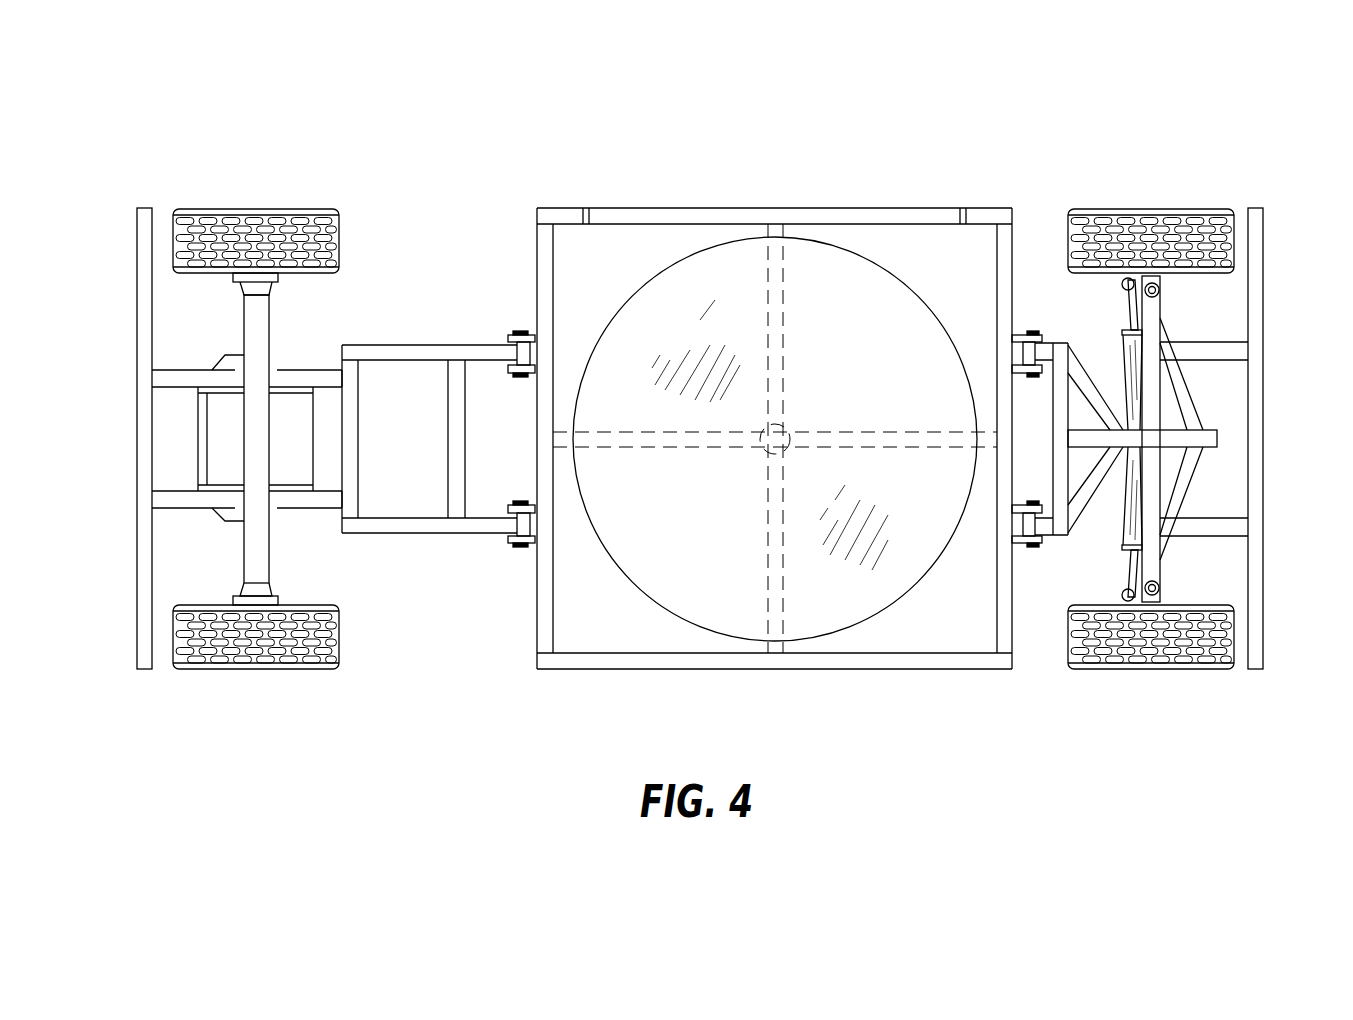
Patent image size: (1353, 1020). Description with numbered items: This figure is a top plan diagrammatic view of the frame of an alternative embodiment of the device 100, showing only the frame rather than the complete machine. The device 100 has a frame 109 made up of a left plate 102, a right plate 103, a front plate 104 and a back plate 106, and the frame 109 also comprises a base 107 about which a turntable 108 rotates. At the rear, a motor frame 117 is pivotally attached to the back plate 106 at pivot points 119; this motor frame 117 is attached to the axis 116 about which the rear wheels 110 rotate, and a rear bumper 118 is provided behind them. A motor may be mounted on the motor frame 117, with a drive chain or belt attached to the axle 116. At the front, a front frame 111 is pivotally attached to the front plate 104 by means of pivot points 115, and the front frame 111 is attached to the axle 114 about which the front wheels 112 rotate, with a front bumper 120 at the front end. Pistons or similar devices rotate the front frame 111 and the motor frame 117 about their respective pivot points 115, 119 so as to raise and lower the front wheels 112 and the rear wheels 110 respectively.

The device 100 is at (578, 64).
The left plate 102 is at (797, 440).
The right plate 103 is at (600, 660).
The front plate 104 is at (1004, 268).
The back plate 106 is at (545, 262).
The base 107 is at (872, 240).
The turntable 108 is at (747, 283).
The frame 109 is at (741, 690).
The rear wheels 110 is at (278, 210).
The front frame 111 is at (1058, 527).
The front wheels 112 is at (1157, 210).
The axle 114 is at (1152, 333).
The pivot points 115 is at (1028, 333).
The axis 116 is at (258, 337).
The motor frame 117 is at (430, 528).
The rear bumper 118 is at (145, 280).
The pivot points 119 is at (520, 332).
The front bumper 120 is at (1257, 483).